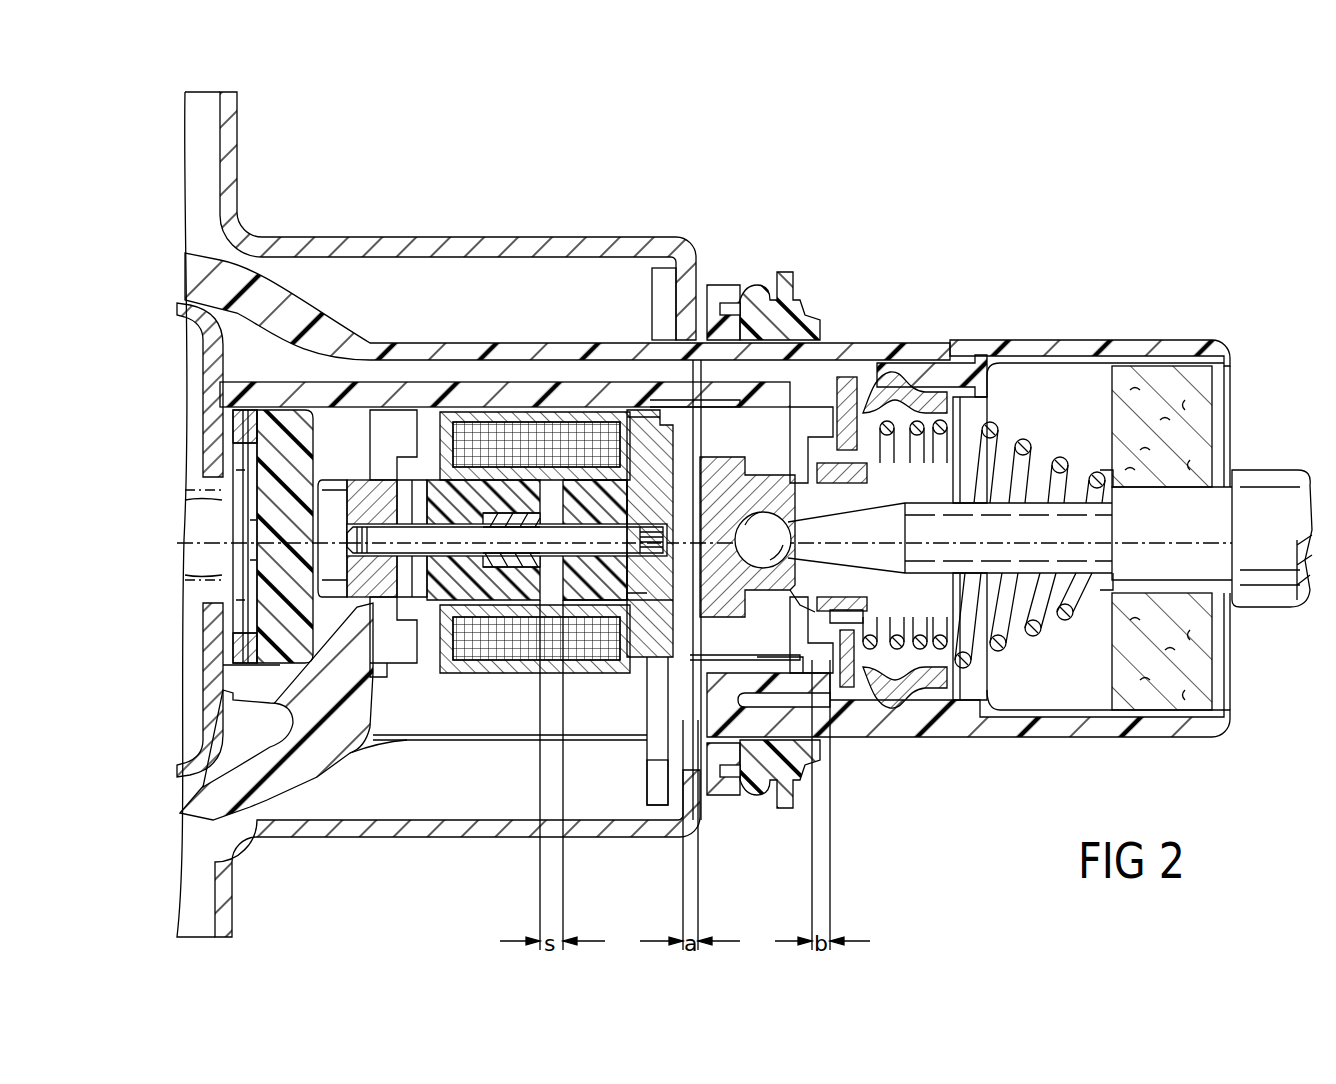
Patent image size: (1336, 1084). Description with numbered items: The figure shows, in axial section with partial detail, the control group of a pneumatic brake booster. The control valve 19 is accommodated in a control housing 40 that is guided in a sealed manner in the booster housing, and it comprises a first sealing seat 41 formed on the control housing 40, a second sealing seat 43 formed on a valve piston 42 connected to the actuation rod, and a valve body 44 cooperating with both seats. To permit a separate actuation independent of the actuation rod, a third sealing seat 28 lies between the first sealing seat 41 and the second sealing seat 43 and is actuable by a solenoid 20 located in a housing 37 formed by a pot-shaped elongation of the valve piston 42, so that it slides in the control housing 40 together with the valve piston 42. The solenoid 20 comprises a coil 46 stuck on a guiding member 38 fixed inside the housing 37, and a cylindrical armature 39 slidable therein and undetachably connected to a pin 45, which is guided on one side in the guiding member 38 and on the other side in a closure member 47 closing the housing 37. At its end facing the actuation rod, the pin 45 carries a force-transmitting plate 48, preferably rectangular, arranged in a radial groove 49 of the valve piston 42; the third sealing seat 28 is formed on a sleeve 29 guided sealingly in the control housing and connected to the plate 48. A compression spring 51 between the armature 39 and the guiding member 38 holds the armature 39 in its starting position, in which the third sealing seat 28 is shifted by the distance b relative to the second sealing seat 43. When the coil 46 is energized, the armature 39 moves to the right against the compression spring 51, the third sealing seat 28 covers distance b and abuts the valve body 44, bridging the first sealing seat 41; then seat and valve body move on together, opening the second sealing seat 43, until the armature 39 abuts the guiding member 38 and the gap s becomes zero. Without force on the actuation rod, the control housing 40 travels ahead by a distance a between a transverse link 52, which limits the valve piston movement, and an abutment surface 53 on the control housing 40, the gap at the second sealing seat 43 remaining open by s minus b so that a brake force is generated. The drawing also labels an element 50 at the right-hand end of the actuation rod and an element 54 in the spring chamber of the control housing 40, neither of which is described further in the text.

The control valve 19 is at (915, 345).
The solenoid 20 is at (533, 394).
The third sealing seat 28 is at (807, 403).
The sleeve 29 is at (773, 667).
The housing 37 is at (535, 696).
The guiding member 38 is at (587, 497).
The armature 39 is at (423, 590).
The control housing 40 is at (1067, 347).
The first sealing seat 41 is at (847, 437).
The valve piston 42 is at (713, 483).
The second sealing seat 43 is at (833, 643).
The valve body 44 is at (880, 367).
The pin 45 is at (427, 537).
The coil 46 is at (520, 633).
The closure member 47 is at (375, 573).
The force-transmitting plate 48 is at (657, 460).
The radial groove 49 is at (692, 490).
The actuating rod 50 is at (1273, 487).
The compression spring 51 is at (503, 525).
The transverse link 52 is at (650, 763).
The abutment surface 53 is at (668, 763).
The compression spring 54 is at (1035, 627).